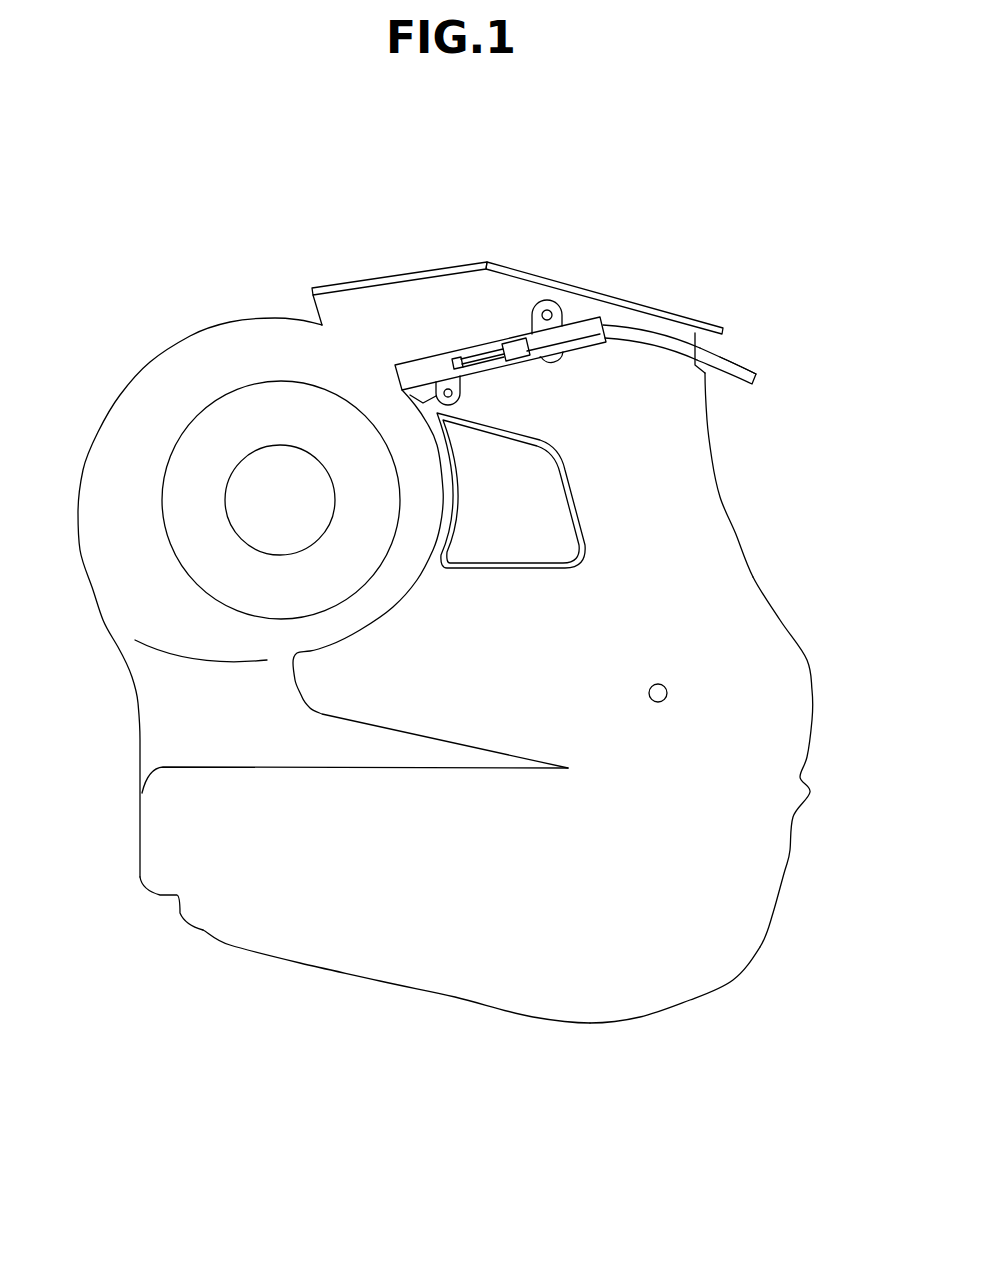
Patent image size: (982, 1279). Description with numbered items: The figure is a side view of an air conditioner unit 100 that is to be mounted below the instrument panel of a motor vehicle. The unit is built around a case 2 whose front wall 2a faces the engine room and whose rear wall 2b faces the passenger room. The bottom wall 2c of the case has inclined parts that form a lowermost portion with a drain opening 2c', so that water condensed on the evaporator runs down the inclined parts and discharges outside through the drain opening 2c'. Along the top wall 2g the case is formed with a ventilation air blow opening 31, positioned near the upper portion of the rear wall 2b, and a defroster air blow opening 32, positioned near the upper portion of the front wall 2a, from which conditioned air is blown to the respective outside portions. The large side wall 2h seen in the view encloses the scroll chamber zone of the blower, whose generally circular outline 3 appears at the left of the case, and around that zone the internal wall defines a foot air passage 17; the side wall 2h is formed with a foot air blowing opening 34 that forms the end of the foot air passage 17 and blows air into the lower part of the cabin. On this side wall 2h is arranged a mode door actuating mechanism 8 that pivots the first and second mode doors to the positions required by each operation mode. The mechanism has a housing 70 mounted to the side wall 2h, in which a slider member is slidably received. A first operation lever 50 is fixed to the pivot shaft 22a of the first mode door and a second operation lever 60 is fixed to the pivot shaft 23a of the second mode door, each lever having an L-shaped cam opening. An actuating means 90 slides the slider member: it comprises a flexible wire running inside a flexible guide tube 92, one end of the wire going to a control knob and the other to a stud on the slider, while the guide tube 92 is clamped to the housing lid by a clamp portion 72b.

The air conditioner unit 100 is at (692, 144).
The case 2 is at (220, 316).
The front wall 2a is at (93, 590).
The rear wall 2b is at (720, 497).
The bottom wall 2c is at (396, 991).
The drain opening 2c' is at (663, 1033).
The top wall 2g is at (517, 270).
The side wall 2h is at (732, 573).
The fan 3 is at (225, 475).
The mode door actuating mechanism 8 is at (427, 355).
The foot air passage 17 is at (522, 507).
The pivot shaft of the first mode door 22a is at (548, 311).
The pivot shaft of the second mode door 23a is at (462, 398).
The ventilation air blow opening 31 is at (622, 312).
The defroster air blow opening 32 is at (343, 282).
The foot air blowing opening 34 is at (573, 493).
The first operation lever 50 is at (556, 365).
The second operation lever 60 is at (433, 400).
The housing 70 is at (452, 358).
The clamp portion 72b is at (520, 362).
The flexible guide tube 92 is at (787, 328).
The actuating means 90 is at (774, 339).